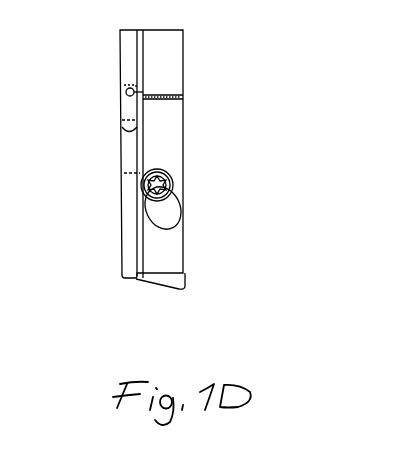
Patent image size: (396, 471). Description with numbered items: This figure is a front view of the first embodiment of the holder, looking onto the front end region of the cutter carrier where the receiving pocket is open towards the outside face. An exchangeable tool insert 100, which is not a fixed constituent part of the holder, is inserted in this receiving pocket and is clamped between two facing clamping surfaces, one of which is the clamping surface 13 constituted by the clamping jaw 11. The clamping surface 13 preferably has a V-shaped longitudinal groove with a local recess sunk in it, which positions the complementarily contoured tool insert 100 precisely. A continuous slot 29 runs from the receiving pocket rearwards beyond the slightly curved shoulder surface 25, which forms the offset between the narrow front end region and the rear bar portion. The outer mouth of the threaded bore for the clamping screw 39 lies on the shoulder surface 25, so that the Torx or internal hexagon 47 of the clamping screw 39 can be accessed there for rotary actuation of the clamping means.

The clamping jaw 11 is at (130, 50).
The tool insert 100 is at (131, 109).
The clamping surface 13 is at (122, 140).
The slot 29 is at (180, 86).
The clamping screw 39 is at (157, 168).
The Torx or internal hexagon 47 is at (172, 182).
The shoulder surface 25 is at (172, 253).